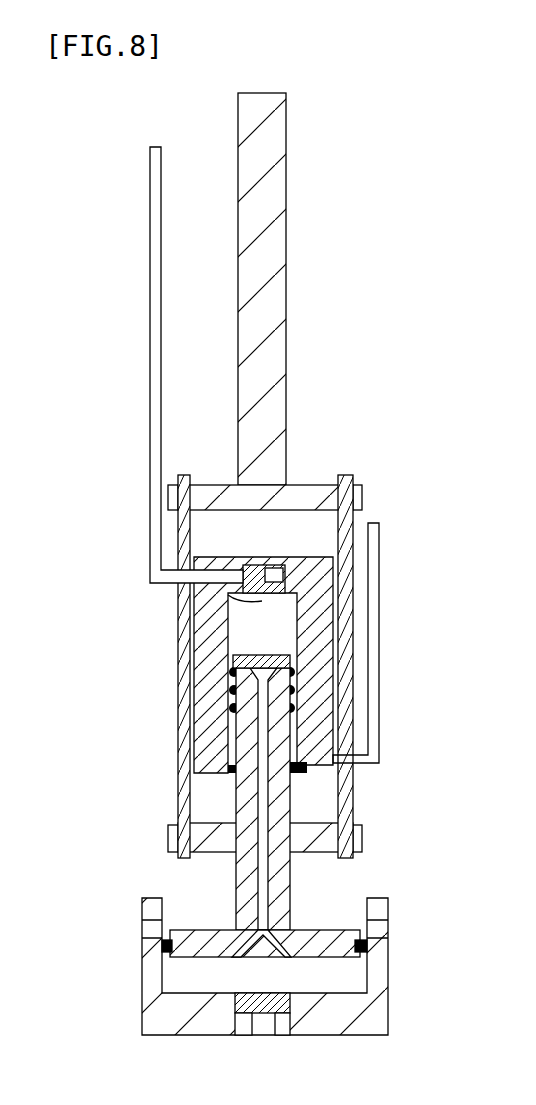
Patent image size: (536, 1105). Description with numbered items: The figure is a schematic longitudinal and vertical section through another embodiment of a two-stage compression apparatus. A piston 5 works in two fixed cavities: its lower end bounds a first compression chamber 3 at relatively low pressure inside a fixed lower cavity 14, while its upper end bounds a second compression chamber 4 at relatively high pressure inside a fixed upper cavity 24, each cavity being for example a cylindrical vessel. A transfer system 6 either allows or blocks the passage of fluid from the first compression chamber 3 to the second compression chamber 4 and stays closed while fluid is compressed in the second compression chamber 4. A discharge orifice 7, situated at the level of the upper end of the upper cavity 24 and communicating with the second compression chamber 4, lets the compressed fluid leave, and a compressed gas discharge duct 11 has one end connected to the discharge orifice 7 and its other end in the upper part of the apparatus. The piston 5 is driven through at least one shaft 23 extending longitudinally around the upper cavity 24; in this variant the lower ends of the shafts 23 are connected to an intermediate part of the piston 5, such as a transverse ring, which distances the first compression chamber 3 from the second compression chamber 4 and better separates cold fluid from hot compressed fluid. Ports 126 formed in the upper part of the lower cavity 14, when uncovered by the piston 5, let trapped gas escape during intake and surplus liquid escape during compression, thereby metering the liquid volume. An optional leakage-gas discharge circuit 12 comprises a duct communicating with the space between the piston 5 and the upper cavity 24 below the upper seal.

The first compression chamber 3 is at (338, 984).
The second compression chamber 4 is at (243, 634).
The piston 5 is at (291, 888).
The transfer system 6 is at (288, 642).
The discharge orifice 7 is at (250, 597).
The compressed gas discharge duct 11 is at (152, 338).
The leakage-gas discharge circuit 12 is at (378, 562).
The lower cavity 14 is at (388, 1014).
The shaft 23 is at (354, 790).
The upper cavity 24 is at (332, 702).
The ports 126 is at (160, 942).